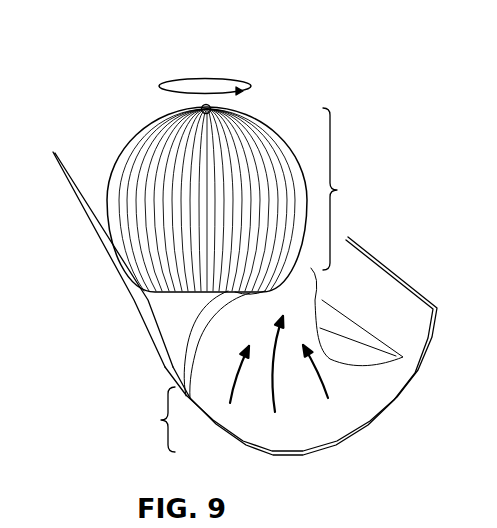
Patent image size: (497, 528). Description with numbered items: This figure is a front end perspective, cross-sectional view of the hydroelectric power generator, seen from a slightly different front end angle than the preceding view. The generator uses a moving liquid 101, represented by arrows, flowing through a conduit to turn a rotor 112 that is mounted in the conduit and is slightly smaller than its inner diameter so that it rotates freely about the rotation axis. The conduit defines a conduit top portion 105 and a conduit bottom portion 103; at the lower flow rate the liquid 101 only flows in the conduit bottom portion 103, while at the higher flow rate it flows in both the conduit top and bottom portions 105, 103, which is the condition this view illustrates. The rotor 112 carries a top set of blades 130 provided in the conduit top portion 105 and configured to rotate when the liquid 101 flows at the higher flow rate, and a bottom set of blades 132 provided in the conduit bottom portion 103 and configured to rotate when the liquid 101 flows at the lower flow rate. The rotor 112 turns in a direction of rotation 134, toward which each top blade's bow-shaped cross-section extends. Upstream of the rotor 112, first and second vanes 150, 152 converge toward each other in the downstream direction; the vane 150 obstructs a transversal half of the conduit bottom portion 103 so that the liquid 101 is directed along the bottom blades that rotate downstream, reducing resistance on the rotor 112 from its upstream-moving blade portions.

The liquid 101 is at (330, 397).
The conduit bottom portion 103 is at (139, 419).
The conduit top portion 105 is at (355, 189).
The rotor 112 is at (282, 125).
The top set of blades 130 is at (107, 173).
The bottom set of blades 132 is at (258, 299).
The direction of rotation 134 is at (177, 78).
The first vane 150 is at (173, 318).
The second vane 152 is at (342, 303).